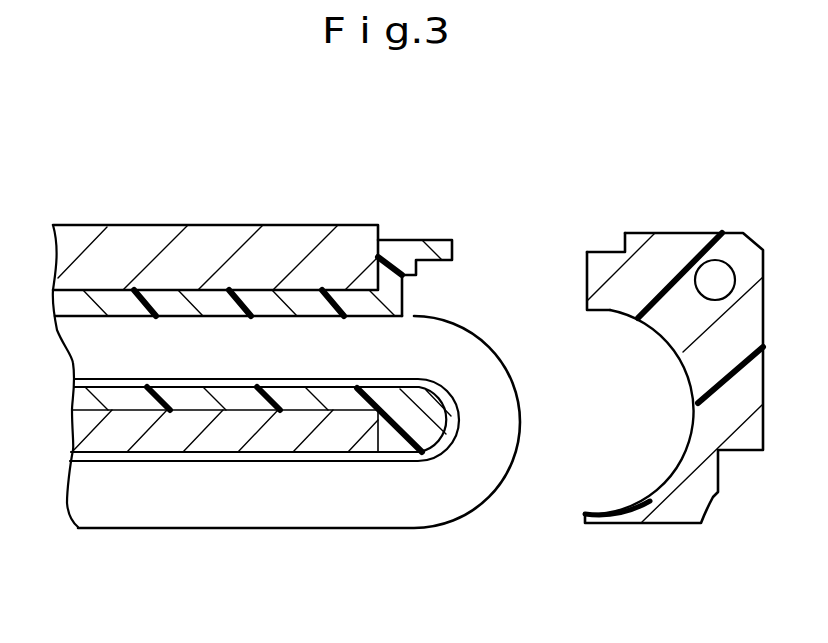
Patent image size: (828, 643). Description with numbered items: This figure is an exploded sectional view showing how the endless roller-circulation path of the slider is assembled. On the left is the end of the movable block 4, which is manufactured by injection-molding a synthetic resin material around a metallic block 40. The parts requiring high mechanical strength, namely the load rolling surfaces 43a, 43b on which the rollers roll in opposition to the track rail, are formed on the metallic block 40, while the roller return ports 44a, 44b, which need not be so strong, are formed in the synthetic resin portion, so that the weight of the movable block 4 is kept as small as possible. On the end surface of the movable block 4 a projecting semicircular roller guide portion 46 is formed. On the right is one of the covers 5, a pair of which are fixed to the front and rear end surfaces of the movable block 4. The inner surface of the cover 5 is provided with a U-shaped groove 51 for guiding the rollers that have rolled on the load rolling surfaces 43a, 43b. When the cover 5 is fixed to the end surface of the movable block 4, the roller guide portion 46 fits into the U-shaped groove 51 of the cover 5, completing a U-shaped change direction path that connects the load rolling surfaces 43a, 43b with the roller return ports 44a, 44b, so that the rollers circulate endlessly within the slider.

The movable block 4 is at (290, 363).
The metallic block 40 is at (167, 225).
The roller return port 44a is at (267, 238).
The roller return port 44b is at (239, 303).
The load rolling surface 43a is at (261, 503).
The load rolling surface 43b is at (252, 462).
The roller guide portion 46 is at (488, 480).
The cover 5 is at (670, 330).
The U-shaped groove 51 is at (697, 418).